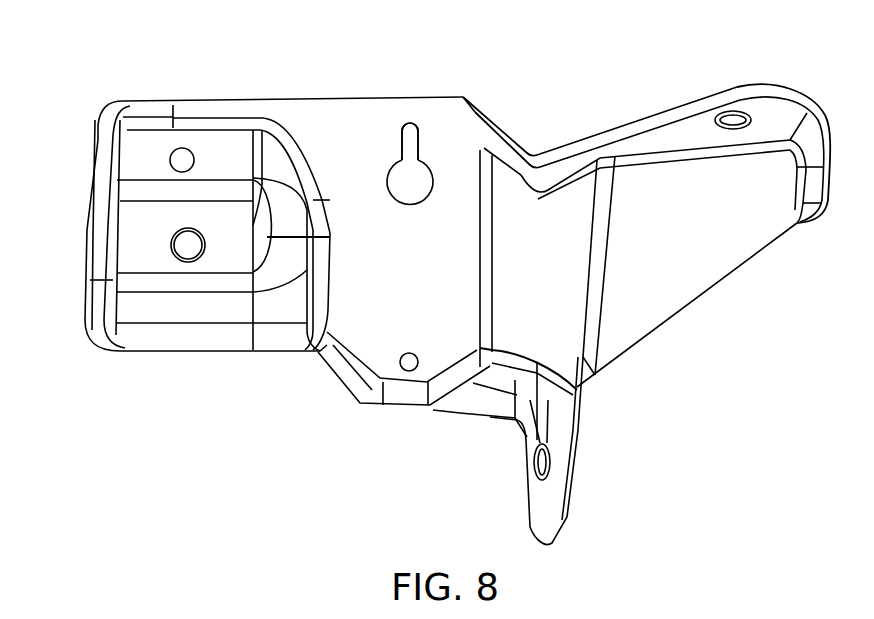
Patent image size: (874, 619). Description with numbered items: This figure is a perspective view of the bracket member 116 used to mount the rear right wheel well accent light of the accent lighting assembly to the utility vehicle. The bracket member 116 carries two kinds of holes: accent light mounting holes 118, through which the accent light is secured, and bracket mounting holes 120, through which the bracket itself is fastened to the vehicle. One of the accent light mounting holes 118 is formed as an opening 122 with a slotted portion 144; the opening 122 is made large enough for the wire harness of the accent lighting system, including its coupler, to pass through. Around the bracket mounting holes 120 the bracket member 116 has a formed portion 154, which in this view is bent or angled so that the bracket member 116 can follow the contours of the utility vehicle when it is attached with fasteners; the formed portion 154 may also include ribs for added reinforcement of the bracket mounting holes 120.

The bracket member 116 is at (490, 62).
The accent light mounting holes 118 is at (405, 122).
The bracket mounting holes 120 is at (171, 243).
The opening 122 is at (412, 180).
The slotted portion 144 is at (418, 152).
The formed portion 154 is at (723, 183).